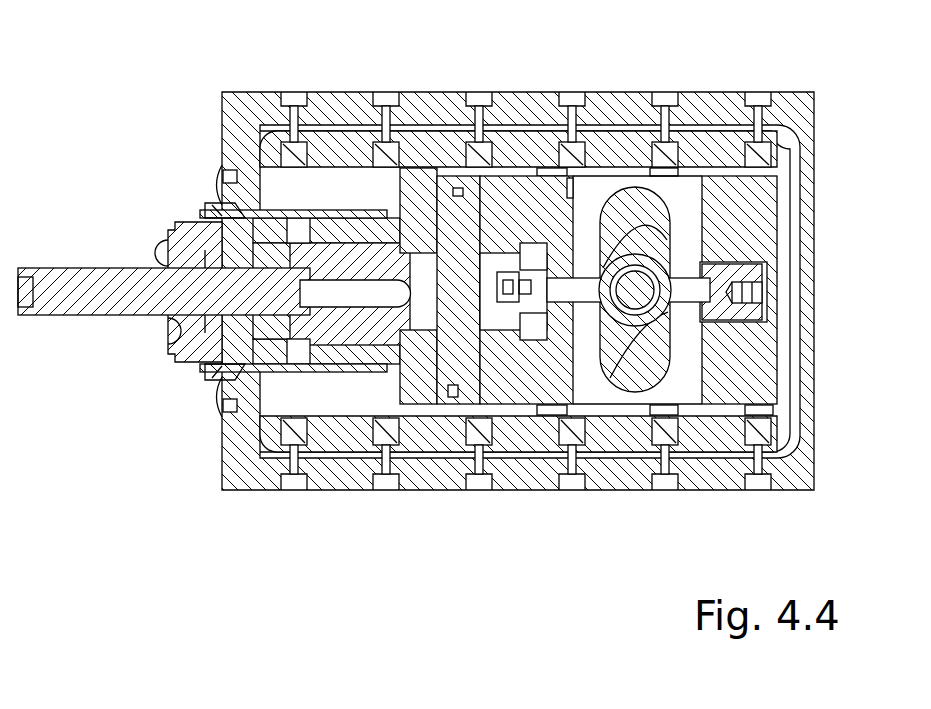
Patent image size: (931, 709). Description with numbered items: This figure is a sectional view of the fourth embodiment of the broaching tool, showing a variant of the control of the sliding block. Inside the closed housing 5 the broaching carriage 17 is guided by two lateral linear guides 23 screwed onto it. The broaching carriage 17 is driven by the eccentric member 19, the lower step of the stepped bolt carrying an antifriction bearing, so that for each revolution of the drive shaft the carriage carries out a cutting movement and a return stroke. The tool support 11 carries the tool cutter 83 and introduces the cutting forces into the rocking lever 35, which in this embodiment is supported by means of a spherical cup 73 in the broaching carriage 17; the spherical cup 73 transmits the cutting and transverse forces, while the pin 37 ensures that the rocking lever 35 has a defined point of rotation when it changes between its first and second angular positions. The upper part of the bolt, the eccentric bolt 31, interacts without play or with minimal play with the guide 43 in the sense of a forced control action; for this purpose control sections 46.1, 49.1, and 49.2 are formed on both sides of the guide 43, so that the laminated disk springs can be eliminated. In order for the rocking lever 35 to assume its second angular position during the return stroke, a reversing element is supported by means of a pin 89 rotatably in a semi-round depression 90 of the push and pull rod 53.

The closed housing 5 is at (810, 297).
The tool support 11 is at (83, 283).
The broaching carriage 17 is at (542, 193).
The eccentric member 19 is at (637, 350).
The lateral linear guides 23 is at (706, 127).
The eccentric bolt 31 is at (658, 315).
The rocking lever 35 is at (343, 257).
The pin 37 is at (240, 226).
The guide 43 is at (650, 195).
The control section 46.1 is at (610, 345).
The control section 49.1 is at (607, 185).
The control section 49.2 is at (661, 205).
The push and pull rod 53 is at (493, 253).
The spherical cup 73 is at (232, 353).
The tool cutter 83 is at (27, 280).
The pin 89 is at (452, 390).
The semi-round depression 90 is at (430, 253).